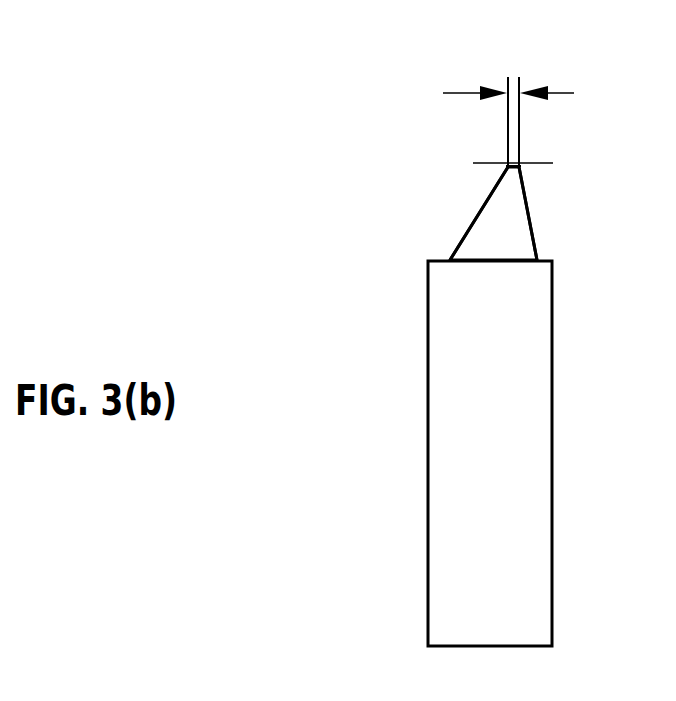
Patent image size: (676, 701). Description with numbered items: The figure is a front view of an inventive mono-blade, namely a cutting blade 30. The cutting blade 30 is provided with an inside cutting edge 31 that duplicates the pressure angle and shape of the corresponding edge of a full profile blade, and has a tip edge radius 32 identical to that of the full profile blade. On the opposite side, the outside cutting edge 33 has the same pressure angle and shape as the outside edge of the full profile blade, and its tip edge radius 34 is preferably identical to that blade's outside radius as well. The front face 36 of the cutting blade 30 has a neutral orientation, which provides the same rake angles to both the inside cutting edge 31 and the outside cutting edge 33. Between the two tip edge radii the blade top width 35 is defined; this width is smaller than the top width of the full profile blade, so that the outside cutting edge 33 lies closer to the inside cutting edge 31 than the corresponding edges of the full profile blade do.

The cutting blade 30 is at (480, 365).
The inside cutting edge 31 is at (485, 202).
The tip edge radius 32 is at (508, 165).
The outside cutting edge 33 is at (531, 217).
The tip edge radius 34 is at (522, 163).
The blade top width 35 is at (513, 77).
The front face 36 is at (487, 228).